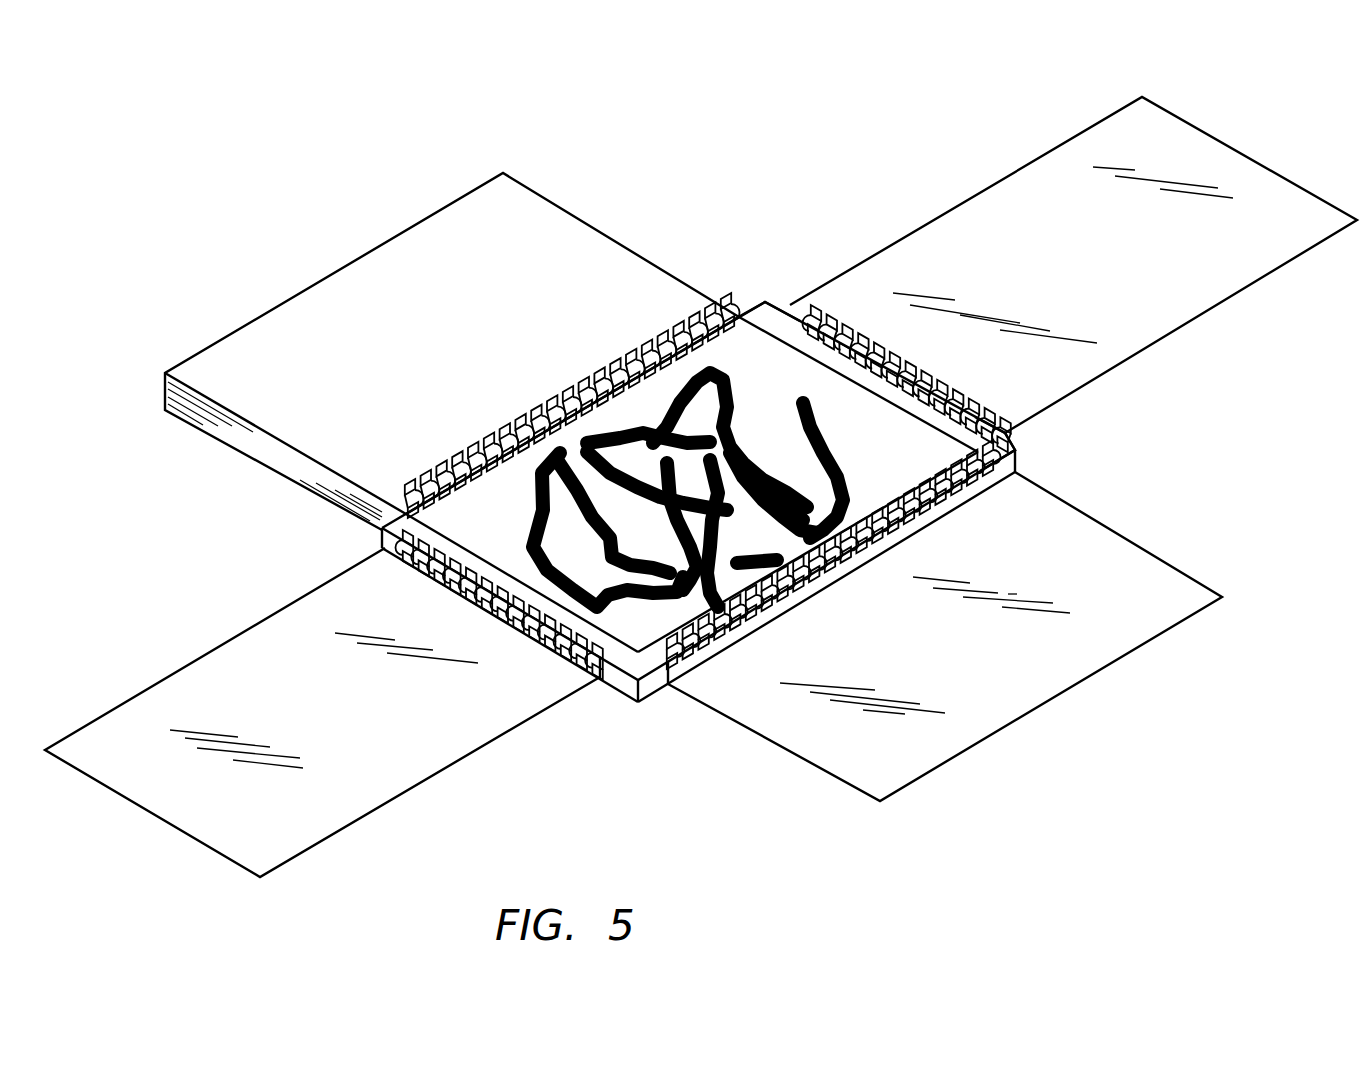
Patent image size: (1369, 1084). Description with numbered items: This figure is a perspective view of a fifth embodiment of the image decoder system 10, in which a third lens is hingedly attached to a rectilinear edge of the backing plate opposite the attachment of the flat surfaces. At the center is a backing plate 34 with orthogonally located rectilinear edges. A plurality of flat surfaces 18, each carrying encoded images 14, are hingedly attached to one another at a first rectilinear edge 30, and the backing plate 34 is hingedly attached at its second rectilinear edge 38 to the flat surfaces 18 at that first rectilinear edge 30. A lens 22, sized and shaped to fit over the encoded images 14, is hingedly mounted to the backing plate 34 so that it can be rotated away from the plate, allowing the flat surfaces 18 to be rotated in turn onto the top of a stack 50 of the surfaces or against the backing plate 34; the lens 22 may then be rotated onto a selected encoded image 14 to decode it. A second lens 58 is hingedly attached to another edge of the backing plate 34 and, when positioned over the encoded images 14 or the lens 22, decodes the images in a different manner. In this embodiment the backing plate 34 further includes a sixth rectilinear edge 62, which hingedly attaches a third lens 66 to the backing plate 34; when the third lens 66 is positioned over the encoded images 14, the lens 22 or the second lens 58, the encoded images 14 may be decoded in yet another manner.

The image decoder system 10 is at (869, 182).
The encoded images 14 is at (536, 195).
The flat surface 18 is at (590, 245).
The lens 22 is at (482, 725).
The first rectilinear edge 30 is at (734, 313).
The backing plate 34 is at (1010, 448).
The second rectilinear edge 38 is at (747, 313).
The stack 50 is at (760, 304).
The second lens 58 is at (1187, 310).
The sixth rectilinear edge 62 is at (976, 451).
The third lens 66 is at (1140, 573).